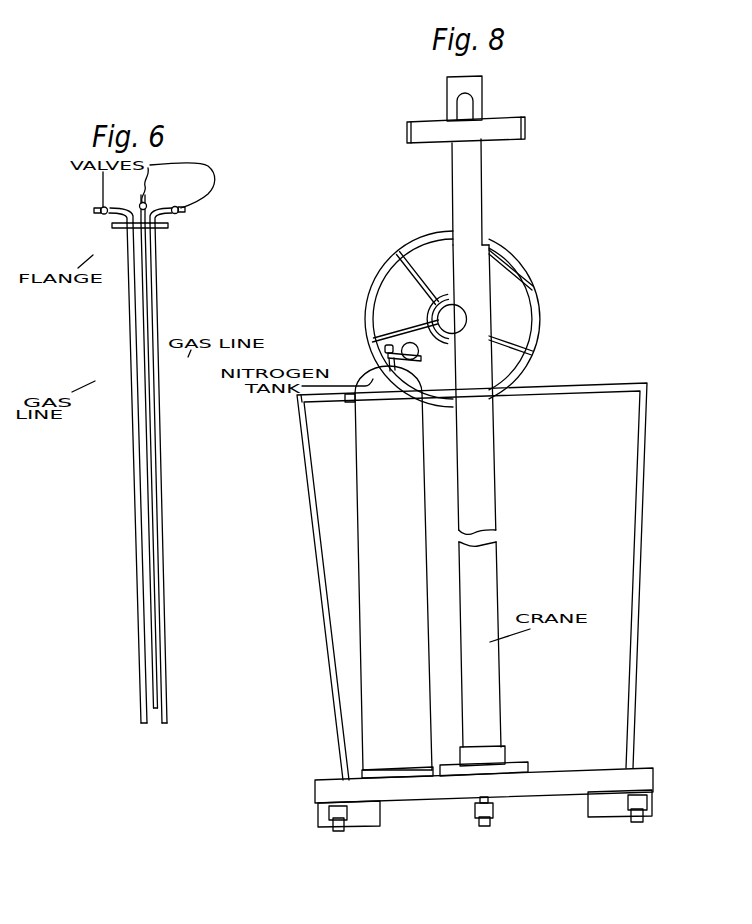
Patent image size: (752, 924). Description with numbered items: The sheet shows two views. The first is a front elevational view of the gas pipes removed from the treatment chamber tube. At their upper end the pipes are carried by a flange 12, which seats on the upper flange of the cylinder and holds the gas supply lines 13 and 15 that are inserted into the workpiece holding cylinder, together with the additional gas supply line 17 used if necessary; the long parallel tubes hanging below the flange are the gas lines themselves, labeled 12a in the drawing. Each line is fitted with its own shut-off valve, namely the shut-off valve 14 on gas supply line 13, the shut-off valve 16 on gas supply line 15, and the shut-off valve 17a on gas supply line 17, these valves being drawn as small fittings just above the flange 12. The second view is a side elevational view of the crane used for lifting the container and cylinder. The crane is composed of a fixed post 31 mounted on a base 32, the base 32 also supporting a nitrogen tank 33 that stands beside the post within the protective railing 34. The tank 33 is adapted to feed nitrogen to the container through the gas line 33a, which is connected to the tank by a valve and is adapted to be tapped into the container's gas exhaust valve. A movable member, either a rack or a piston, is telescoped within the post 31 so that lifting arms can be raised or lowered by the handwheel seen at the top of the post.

In FIG. 6, the flange 12 is at (118, 229).
In FIG. 6, the gas line tubes 12a is at (150, 573).
In FIG. 6, the gas supply line 13 is at (99, 208).
In FIG. 6, the shut-off valve 14 is at (101, 213).
In FIG. 6, the gas supply line 15 is at (156, 376).
In FIG. 6, the shut-off valve 16 is at (179, 213).
In FIG. 6, the gas supply line 17 is at (146, 204).
In FIG. 6, the shut-off valve 17a is at (139, 204).
In FIG. 8, the fixed post 31 is at (488, 455).
In FIG. 8, the base 32 is at (573, 778).
In FIG. 8, the nitrogen tank 33 is at (389, 572).
In FIG. 8, the gas line 33a is at (419, 354).
In FIG. 8, the railing 34 is at (583, 389).